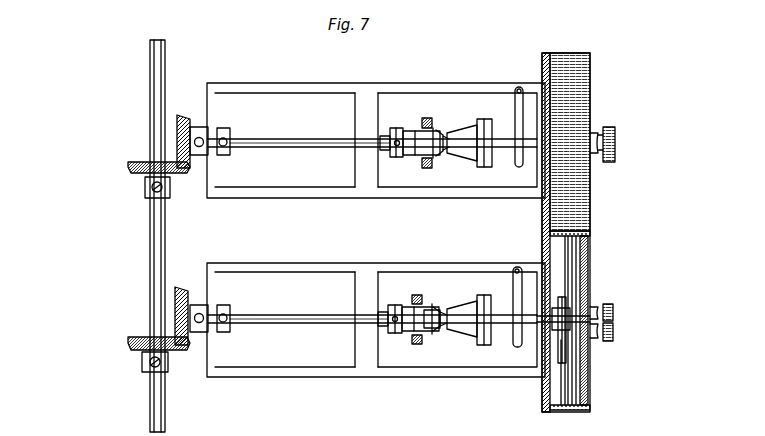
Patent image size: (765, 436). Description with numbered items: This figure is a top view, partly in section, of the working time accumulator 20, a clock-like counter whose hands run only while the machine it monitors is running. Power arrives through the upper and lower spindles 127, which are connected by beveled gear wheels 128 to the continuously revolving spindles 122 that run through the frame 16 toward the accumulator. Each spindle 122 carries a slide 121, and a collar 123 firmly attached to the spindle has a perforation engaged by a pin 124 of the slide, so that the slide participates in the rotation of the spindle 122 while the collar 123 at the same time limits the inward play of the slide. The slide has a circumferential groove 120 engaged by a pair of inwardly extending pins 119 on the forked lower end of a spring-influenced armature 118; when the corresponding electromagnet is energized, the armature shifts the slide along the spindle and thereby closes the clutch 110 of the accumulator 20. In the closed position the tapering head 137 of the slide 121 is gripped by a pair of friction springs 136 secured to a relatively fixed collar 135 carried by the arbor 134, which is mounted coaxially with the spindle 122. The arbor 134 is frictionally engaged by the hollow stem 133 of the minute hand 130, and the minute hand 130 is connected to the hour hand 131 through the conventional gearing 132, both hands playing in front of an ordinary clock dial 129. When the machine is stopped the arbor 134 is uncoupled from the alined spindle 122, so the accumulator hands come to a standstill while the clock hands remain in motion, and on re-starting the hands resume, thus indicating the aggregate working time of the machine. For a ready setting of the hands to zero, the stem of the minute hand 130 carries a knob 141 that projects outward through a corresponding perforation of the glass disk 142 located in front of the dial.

The frame 16 is at (461, 91).
The working time accumulator 20 is at (585, 83).
The clutch 110 is at (441, 158).
The spring-influenced armature 118 is at (428, 118).
The inwardly extending pins 119 is at (420, 152).
The circumferential groove 120 is at (427, 308).
The slide 121 is at (417, 133).
The spindle 122 is at (277, 141).
The collar 123 is at (392, 150).
The pin 124 is at (395, 130).
The spindle 127 is at (152, 252).
The beveled gear wheels 128 is at (175, 137).
The clock dial 129 is at (586, 249).
The minute hand 130 is at (574, 285).
The hour hand 131 is at (575, 382).
The gearing 132 is at (550, 348).
The hollow stem 133 is at (613, 312).
The arbor 134 is at (530, 143).
The collar 135 is at (486, 160).
The friction springs 136 is at (455, 150).
The tapering head 137 is at (438, 130).
The knob 141 is at (615, 150).
The glass disk 142 is at (578, 268).